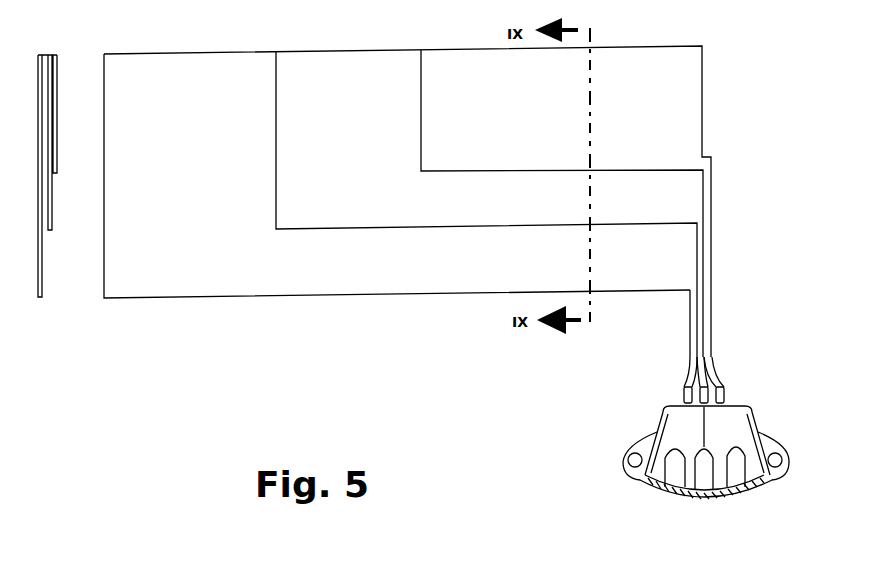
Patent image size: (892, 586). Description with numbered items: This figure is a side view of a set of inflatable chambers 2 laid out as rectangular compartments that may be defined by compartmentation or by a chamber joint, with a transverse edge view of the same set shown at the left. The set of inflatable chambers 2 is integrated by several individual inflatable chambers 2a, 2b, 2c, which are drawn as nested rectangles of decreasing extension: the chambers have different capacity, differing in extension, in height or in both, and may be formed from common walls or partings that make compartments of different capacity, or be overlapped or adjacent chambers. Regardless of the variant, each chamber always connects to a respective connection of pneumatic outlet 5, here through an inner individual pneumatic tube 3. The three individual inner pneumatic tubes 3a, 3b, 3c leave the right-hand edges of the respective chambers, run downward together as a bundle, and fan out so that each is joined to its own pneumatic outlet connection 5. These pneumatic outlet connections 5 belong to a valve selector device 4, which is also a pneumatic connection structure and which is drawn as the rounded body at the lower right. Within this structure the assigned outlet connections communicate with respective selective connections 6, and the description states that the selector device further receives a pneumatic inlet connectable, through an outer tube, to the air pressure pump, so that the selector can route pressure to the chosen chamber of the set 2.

The set of inflatable chambers 2 is at (665, 40).
The inflatable chamber 2a is at (529, 108).
The inflatable chamber 2b is at (384, 150).
The inflatable chamber 2c is at (243, 178).
The inner individual pneumatic tube 3 is at (688, 337).
The individual inner pneumatic tube 3a is at (726, 378).
The individual inner pneumatic tube 3b is at (712, 365).
The individual inner pneumatic tube 3c is at (700, 356).
The valve selector device 4 is at (718, 432).
The pneumatic outlet connection 5 is at (670, 404).
The selective connection 6 is at (652, 497).